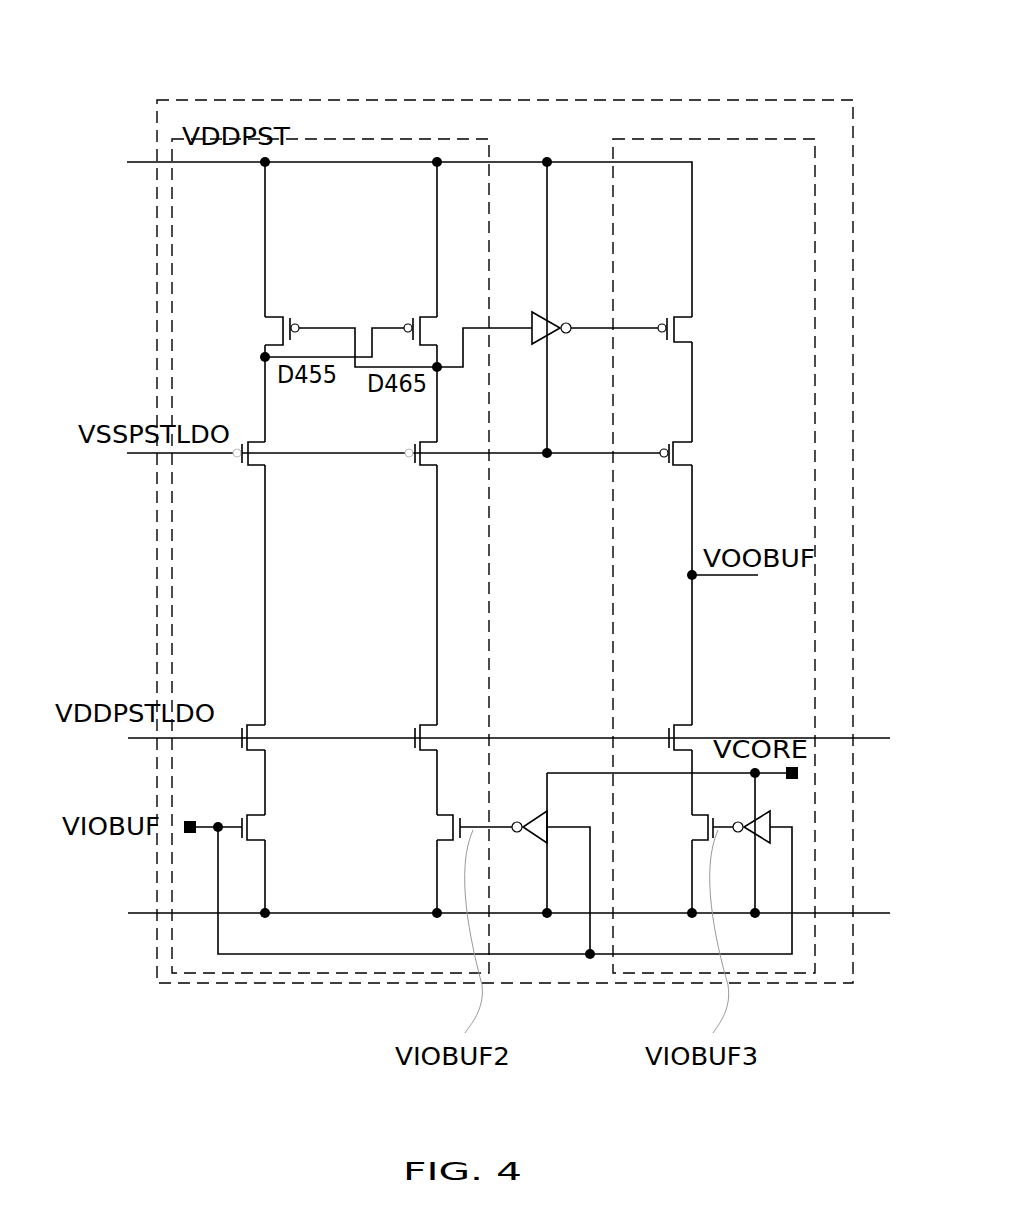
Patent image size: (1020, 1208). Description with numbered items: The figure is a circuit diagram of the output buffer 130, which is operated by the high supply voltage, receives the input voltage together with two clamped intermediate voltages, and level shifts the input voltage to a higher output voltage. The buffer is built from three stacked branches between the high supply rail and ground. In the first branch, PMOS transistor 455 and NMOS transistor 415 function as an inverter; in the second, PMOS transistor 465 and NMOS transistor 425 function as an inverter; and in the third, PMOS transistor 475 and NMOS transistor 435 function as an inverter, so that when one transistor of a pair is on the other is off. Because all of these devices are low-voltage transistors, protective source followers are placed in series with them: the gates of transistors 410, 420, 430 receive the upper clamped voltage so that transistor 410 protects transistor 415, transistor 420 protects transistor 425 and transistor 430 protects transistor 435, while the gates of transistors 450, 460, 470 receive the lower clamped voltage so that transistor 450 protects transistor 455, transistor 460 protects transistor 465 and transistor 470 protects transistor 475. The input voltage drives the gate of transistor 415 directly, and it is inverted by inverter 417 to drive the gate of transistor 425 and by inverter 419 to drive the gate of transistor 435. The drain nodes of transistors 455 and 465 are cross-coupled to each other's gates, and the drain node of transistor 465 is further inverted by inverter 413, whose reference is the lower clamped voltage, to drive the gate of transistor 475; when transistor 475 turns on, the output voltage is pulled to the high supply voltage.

The output buffer 130 is at (497, 35).
The transistor 410 is at (279, 752).
The NMOS transistor 415 is at (277, 827).
The transistor 420 is at (411, 757).
The NMOS transistor 425 is at (450, 827).
The transistor 430 is at (706, 728).
The NMOS transistor 435 is at (688, 828).
The transistor 450 is at (274, 467).
The PMOS transistor 455 is at (288, 316).
The transistor 460 is at (410, 471).
The PMOS transistor 465 is at (410, 316).
The transistor 470 is at (667, 471).
The PMOS transistor 475 is at (699, 330).
The inverter INV413 413 is at (578, 344).
The inverter INV417 417 is at (543, 814).
The inverter INV419 419 is at (766, 845).